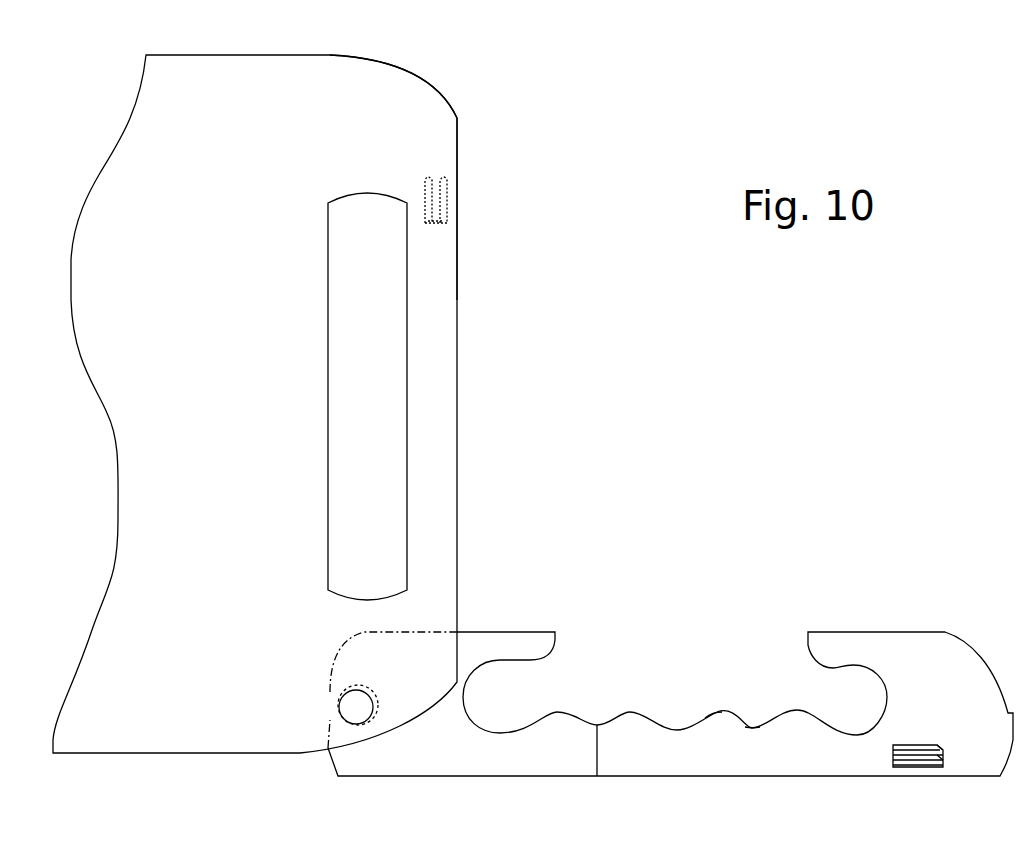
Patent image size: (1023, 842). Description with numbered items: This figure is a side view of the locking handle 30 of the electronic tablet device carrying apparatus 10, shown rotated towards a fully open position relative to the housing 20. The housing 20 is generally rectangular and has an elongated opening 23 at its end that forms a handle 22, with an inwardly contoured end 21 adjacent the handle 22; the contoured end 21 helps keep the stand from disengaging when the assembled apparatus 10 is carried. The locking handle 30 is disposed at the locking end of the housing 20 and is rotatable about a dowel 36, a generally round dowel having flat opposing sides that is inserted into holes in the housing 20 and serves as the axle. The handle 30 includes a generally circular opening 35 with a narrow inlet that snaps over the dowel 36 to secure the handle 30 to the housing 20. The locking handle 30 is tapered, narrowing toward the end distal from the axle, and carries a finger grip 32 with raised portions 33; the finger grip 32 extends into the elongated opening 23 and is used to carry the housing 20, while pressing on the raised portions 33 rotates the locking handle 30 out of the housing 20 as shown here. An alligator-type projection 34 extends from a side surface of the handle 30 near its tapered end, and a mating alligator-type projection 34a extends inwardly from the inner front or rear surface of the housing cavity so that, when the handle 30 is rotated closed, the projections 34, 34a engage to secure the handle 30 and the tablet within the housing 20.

The electronic tablet device carrying apparatus 10 is at (740, 380).
The housing 20 is at (458, 513).
The inwardly contoured ends 21 is at (427, 88).
The handle 22 is at (487, 157).
The elongated opening 23 is at (367, 396).
The locking handle 30 is at (885, 632).
The finger grip 32 is at (757, 727).
The raised portions 33 is at (715, 711).
The alligator-type projection 34 is at (921, 745).
The mating alligator-type projection 34a is at (425, 175).
The generally circular opening 35 is at (374, 689).
The dowel 36 is at (339, 704).